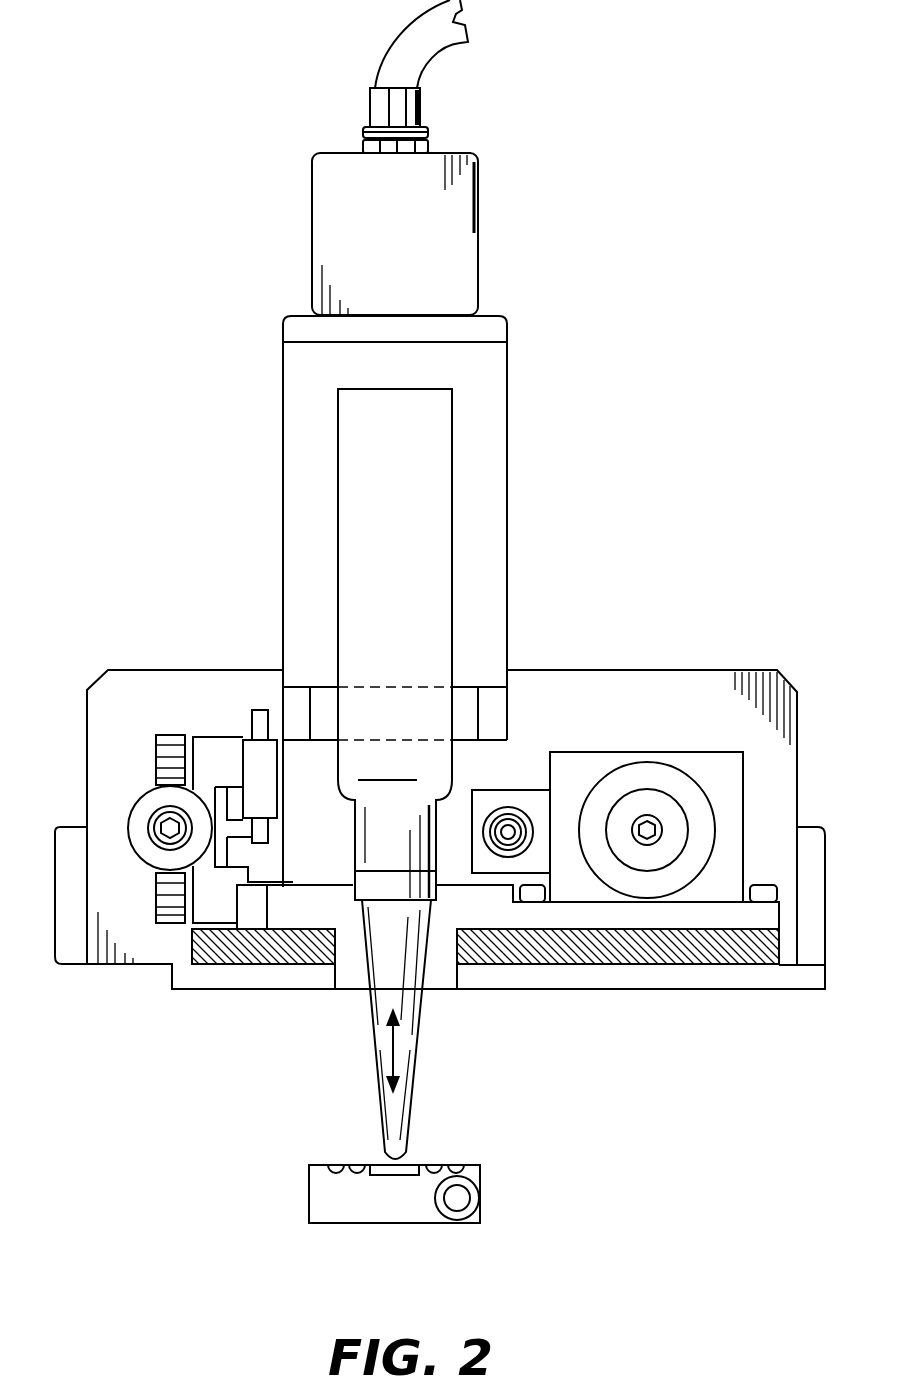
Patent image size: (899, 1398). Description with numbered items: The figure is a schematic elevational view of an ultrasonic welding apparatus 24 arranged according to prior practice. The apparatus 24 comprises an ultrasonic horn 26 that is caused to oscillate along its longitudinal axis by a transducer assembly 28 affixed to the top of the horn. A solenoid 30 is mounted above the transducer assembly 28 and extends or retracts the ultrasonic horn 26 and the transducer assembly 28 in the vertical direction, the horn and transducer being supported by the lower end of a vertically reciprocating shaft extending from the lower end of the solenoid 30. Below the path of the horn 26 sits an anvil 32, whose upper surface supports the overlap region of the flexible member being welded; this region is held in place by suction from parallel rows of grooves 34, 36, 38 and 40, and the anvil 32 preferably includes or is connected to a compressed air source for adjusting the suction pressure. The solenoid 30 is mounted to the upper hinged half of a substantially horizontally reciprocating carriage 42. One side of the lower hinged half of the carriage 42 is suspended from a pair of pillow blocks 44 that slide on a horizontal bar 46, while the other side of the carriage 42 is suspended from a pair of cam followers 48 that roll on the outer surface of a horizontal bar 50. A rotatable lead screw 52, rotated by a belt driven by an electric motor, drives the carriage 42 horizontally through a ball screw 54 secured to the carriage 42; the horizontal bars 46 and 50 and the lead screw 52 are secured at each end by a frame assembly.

The ultrasonic welding apparatus 24 is at (252, 266).
The ultrasonic horn 26 is at (415, 1083).
The transducer assembly 28 is at (480, 497).
The solenoid 30 is at (447, 262).
The anvil 32 is at (372, 1225).
The groove 34 is at (335, 1163).
The groove 36 is at (358, 1162).
The groove 38 is at (435, 1162).
The groove 40 is at (457, 1162).
The carriage 42 is at (219, 712).
The pillow blocks 44 is at (713, 777).
The horizontal bar 46 is at (647, 778).
The cam followers 48 is at (156, 762).
The horizontal bar 50 is at (136, 801).
The lead screw 52 is at (508, 830).
The ball screw 54 is at (532, 797).